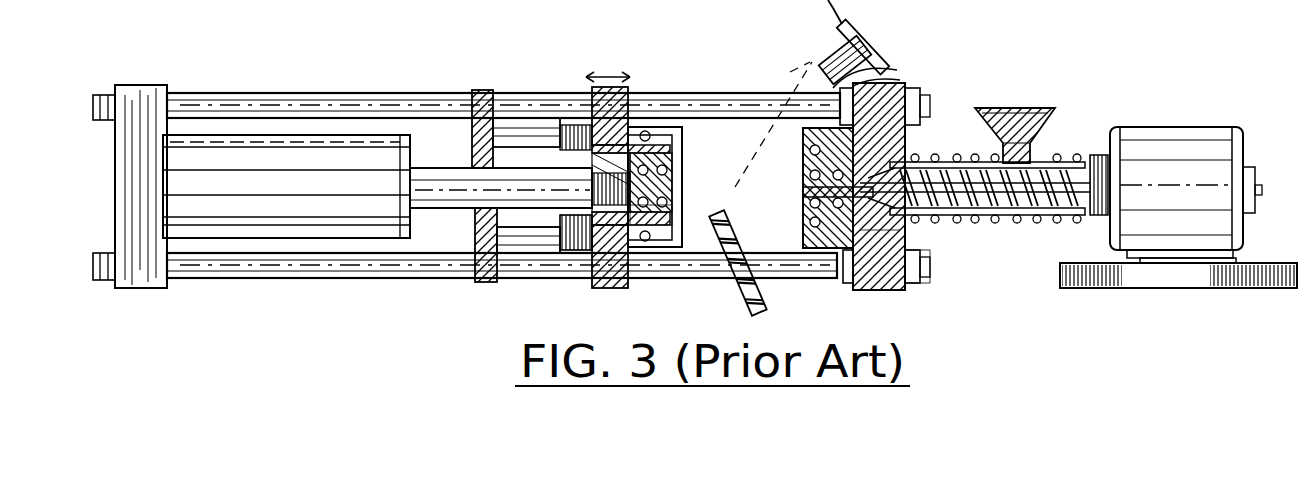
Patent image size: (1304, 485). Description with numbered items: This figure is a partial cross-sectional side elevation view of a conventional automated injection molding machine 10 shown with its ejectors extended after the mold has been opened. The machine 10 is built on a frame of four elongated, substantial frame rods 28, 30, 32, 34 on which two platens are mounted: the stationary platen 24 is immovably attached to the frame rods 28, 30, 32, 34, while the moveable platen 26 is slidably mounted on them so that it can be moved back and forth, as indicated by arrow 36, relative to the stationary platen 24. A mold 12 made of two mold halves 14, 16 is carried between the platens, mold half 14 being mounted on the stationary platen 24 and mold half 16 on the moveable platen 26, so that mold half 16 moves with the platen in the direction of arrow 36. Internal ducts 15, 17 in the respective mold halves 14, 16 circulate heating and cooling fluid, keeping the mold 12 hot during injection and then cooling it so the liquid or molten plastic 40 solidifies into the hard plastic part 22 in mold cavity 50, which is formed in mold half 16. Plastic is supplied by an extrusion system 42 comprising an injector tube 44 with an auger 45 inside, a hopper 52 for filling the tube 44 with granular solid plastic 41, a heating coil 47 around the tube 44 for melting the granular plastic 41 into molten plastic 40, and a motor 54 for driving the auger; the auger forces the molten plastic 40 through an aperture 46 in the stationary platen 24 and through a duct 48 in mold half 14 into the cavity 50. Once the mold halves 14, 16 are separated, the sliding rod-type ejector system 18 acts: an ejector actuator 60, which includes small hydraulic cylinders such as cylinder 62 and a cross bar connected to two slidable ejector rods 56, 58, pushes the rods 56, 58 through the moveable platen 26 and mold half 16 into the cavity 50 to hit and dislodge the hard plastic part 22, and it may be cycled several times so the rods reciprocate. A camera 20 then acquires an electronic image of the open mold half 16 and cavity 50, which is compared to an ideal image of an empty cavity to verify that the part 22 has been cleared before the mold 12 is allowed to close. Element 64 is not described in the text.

The injection molding machine 10 is at (280, 70).
The mold 12 is at (762, 95).
The mold half 14 is at (820, 250).
The internal duct 15 is at (885, 240).
The mold half 16 is at (665, 242).
The internal duct 17 is at (572, 140).
The ejector system 18 is at (570, 110).
The camera 20 is at (835, 55).
The hard plastic part 22 is at (756, 310).
The stationary platen 24 is at (906, 130).
The moveable platen 26 is at (605, 290).
The frame rod 28 is at (897, 70).
The frame rod 30 is at (365, 92).
The frame rod 32 is at (838, 210).
The frame rod 34 is at (380, 278).
The arrow 36 is at (613, 74).
The liquid or molten plastic 40 is at (920, 161).
The granular solid plastic 41 is at (1012, 110).
The plastic extrusion system 42 is at (1058, 127).
The injector tube 44 is at (1045, 166).
The auger 45 is at (1066, 222).
The aperture 46 is at (932, 222).
The heating coil 47 is at (992, 223).
The duct 48 is at (932, 262).
The mold cavity 50 is at (668, 195).
The hopper 52 is at (968, 108).
The motor 54 is at (1145, 126).
The ejector rod 56 is at (668, 150).
The ejector rod 58 is at (672, 216).
The ejector actuator 60 is at (590, 276).
The hydraulic cylinder 62 is at (493, 98).
The cylinder end 64 is at (530, 282).